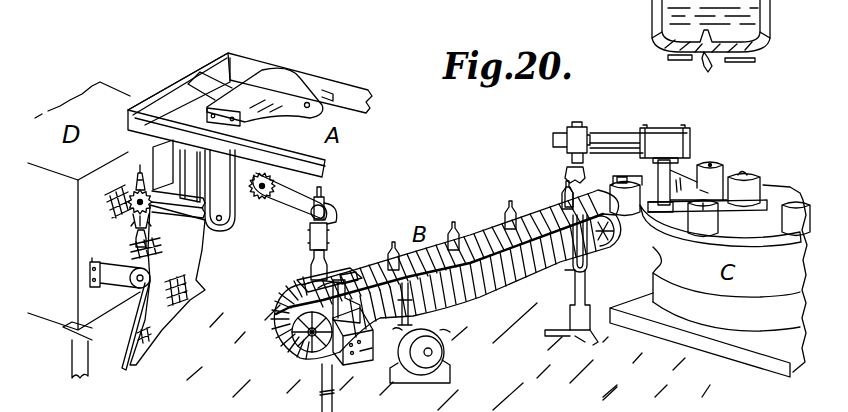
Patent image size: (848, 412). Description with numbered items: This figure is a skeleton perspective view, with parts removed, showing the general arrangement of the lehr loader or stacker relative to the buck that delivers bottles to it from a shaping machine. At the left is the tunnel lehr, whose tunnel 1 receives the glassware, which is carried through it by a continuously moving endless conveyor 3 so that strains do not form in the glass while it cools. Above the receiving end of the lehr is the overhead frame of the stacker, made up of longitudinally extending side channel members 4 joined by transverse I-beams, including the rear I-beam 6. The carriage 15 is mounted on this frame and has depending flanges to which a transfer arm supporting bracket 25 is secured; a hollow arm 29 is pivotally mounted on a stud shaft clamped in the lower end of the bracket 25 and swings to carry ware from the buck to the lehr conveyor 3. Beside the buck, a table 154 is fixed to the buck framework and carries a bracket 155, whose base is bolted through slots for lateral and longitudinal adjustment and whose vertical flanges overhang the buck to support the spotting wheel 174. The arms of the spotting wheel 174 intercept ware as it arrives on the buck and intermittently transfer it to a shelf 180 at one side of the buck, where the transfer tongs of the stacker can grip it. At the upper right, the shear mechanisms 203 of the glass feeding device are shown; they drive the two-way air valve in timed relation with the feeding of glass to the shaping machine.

The tunnel 1 is at (176, 171).
The endless conveyor 3 is at (192, 283).
The side channel members 4 is at (317, 85).
The I-beam 6 is at (197, 80).
The carriage 15 is at (263, 82).
The transfer arm supporting bracket 25 is at (225, 190).
The arm 29 is at (297, 203).
The table 154 is at (377, 330).
The bracket 155 is at (360, 273).
The spotting wheel 174 is at (313, 290).
The shelf 180 is at (327, 270).
The shear mechanisms 203 is at (740, 62).